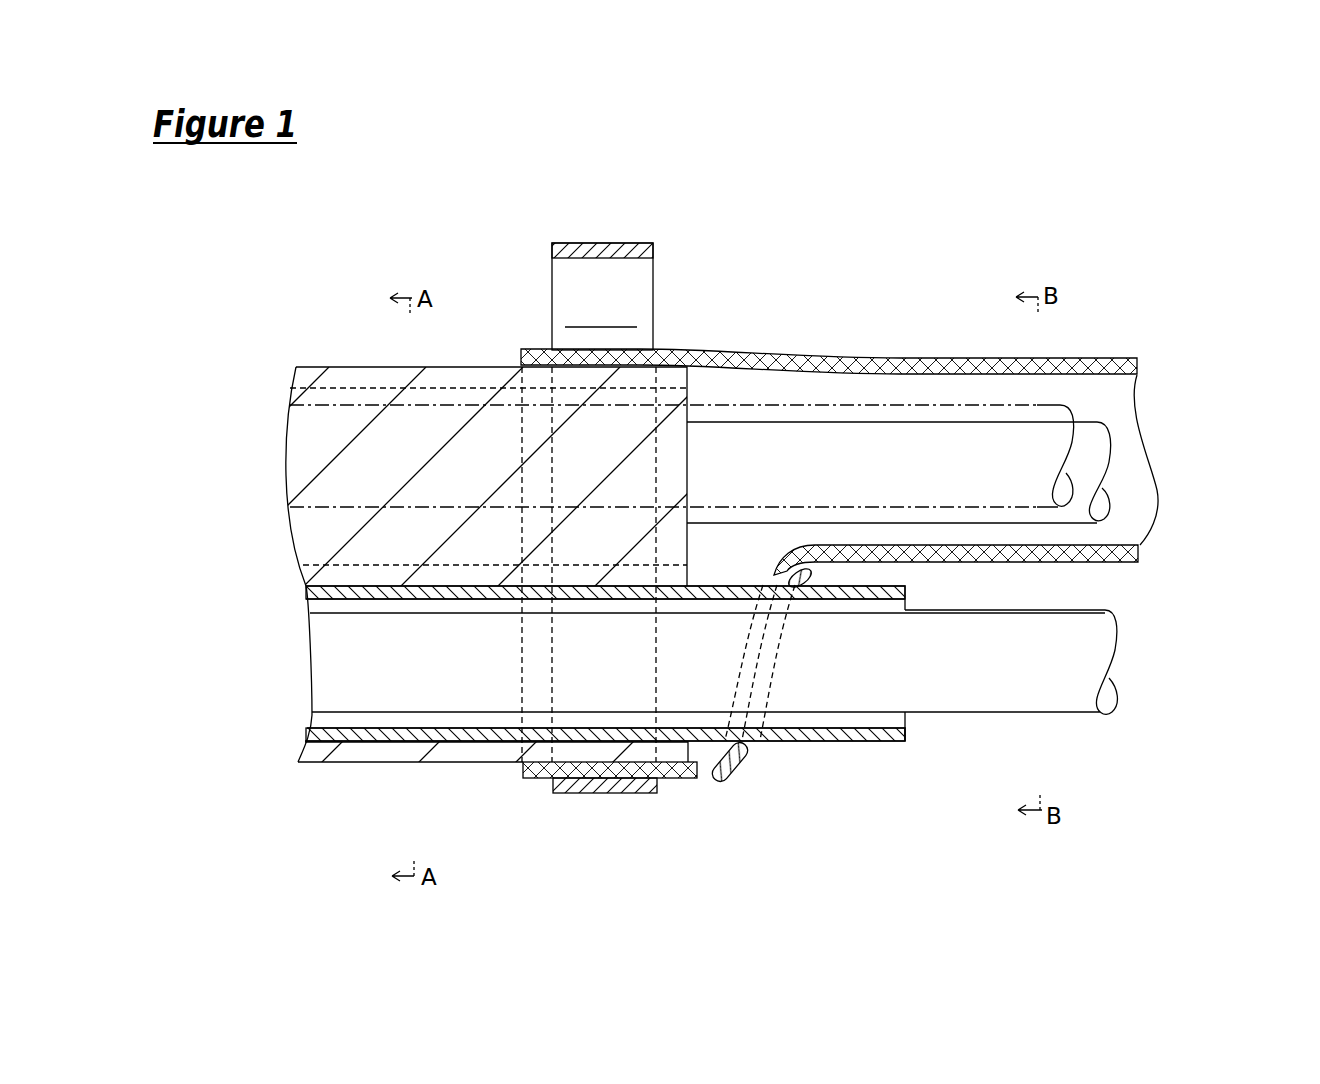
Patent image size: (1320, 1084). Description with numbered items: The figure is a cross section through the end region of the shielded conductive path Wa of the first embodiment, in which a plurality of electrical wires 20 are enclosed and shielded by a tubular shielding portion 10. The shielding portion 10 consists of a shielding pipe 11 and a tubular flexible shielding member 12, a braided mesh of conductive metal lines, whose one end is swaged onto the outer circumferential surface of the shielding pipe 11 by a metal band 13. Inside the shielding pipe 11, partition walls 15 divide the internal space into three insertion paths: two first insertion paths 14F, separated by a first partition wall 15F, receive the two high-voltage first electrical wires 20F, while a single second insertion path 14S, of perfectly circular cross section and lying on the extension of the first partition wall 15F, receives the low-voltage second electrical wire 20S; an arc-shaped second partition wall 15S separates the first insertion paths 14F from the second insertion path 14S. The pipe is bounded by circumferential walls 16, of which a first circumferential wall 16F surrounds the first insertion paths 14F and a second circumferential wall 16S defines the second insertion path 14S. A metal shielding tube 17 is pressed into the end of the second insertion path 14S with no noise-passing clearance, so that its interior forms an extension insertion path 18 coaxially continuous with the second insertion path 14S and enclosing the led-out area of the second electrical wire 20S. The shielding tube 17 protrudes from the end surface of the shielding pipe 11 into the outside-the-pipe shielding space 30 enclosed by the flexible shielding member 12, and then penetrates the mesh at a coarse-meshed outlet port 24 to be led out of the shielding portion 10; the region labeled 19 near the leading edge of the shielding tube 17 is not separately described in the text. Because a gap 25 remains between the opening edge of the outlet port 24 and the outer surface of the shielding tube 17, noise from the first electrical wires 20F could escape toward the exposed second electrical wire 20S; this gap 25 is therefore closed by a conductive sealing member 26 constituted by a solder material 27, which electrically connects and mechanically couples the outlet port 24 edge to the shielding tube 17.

The shielding portion 10 is at (632, 156).
The shielding pipe 11 is at (482, 428).
The flexible shielding member 12 is at (725, 347).
The metal band 13 is at (603, 793).
The first insertion path 14F is at (355, 390).
The second insertion path 14S is at (352, 735).
The partition walls 15 is at (188, 485).
The first partition wall 15F is at (353, 497).
The second partition wall 15S is at (345, 572).
The circumferential walls 16 is at (457, 760).
The front end of sheath 16F is at (373, 378).
The second circumferential wall 16S is at (498, 760).
The shielding tube 17 is at (817, 737).
The extension insertion path 18 is at (842, 728).
The end of insulation 19 is at (907, 718).
The electrical wires 20 is at (1240, 533).
The first electrical wires 20F is at (1037, 445).
The second electrical wire 20S is at (1080, 633).
The outlet port 24 is at (775, 577).
The gap 25 is at (723, 748).
The sealing member 26 is at (740, 810).
The solder material 27 is at (745, 760).
The outside-the-pipe shielding space 30 is at (747, 387).
The shielded conductive path Wa is at (469, 192).